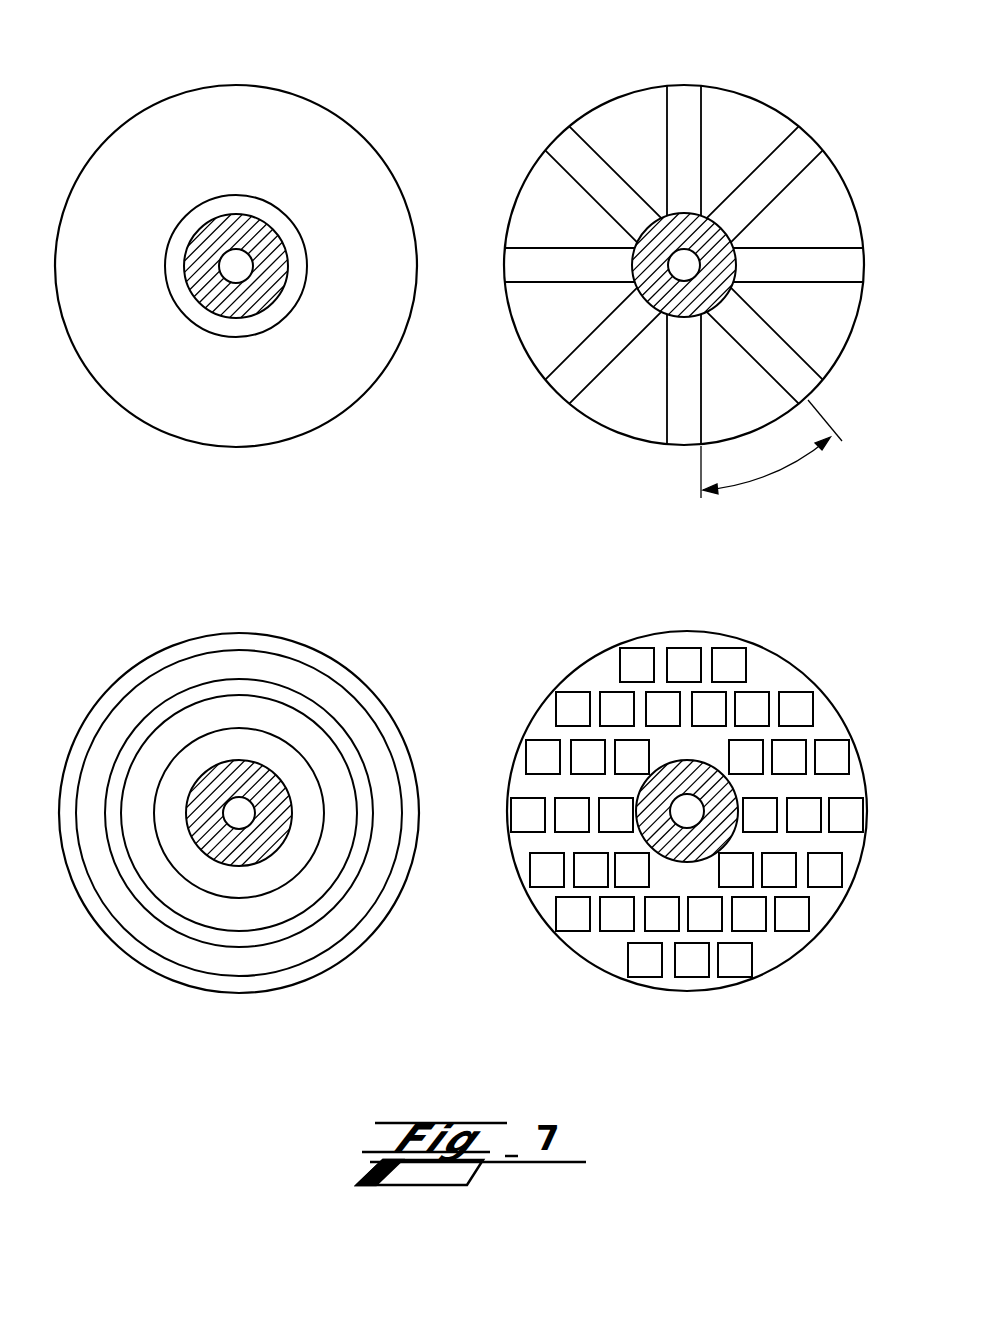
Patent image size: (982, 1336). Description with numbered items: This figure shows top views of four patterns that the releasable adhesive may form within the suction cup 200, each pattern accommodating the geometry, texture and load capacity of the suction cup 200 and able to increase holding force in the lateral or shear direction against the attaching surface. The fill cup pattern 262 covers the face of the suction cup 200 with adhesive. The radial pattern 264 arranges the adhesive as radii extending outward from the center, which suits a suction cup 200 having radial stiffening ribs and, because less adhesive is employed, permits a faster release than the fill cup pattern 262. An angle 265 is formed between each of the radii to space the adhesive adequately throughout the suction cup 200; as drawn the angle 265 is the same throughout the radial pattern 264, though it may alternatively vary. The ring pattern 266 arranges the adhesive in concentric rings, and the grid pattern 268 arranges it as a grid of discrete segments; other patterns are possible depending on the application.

The suction cup 200 is at (372, 378).
The fill cup pattern 262 is at (272, 250).
The radial pattern 264 is at (684, 86).
The angle 265 is at (777, 473).
The ring pattern 266 is at (117, 720).
The grid pattern 268 is at (567, 692).